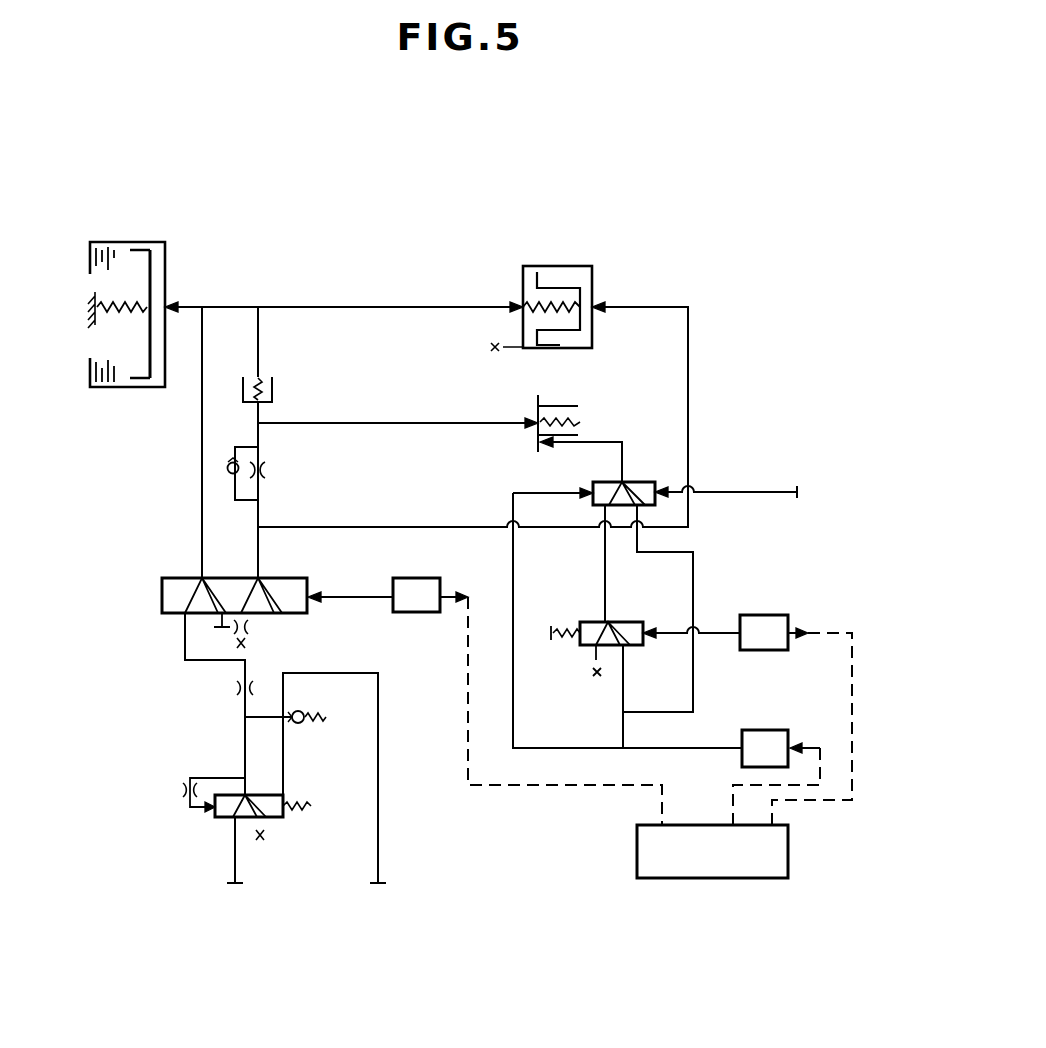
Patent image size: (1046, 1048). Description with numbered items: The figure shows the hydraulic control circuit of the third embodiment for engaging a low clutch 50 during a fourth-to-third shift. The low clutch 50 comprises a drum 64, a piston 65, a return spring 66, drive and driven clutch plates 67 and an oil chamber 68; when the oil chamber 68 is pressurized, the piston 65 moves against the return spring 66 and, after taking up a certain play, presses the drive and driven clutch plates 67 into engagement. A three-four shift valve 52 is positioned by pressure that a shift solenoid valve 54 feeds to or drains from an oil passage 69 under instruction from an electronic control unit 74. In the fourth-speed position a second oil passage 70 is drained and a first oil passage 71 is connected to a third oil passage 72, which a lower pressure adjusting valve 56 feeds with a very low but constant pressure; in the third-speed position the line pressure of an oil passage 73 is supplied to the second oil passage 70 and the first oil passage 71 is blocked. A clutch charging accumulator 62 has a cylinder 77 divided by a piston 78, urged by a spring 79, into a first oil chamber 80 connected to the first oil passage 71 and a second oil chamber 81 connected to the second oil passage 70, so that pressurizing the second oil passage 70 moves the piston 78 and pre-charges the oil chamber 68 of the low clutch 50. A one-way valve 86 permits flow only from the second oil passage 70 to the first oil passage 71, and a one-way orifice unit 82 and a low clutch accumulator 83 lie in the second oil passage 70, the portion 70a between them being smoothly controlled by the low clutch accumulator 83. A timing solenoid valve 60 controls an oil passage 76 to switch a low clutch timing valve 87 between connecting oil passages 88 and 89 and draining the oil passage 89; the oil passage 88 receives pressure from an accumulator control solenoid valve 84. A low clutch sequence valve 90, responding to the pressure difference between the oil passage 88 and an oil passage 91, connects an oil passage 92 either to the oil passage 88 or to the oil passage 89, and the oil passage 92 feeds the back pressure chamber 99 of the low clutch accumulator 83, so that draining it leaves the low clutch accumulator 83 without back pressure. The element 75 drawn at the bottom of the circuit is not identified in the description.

The low clutch 50 is at (130, 310).
The 3-4 shift valve 52 is at (318, 580).
The shift solenoid valve 54 is at (442, 580).
The lower pressure adjusting valve 56 is at (288, 785).
The timing solenoid valve 60 is at (772, 604).
The clutch charging accumulator 62 is at (543, 278).
The drum 64 is at (130, 388).
The piston 65 is at (152, 268).
The return spring 66 is at (115, 318).
The drive and driven clutch plates 67 is at (85, 258).
The oil chamber 68 is at (160, 355).
The oil passage 69 is at (355, 600).
The second oil passage 70 is at (386, 526).
The portion of second oil passage 70a is at (405, 421).
The first oil passage 71 is at (325, 304).
The third oil passage 72 is at (185, 645).
The oil passage 73 is at (380, 740).
The electronic control unit 74 is at (790, 852).
The drain 75 is at (240, 864).
The oil passage 76 is at (718, 632).
The cylinder 77 is at (548, 266).
The piston 78 is at (555, 336).
The spring 79 is at (530, 312).
The first oil chamber 80 is at (525, 298).
The second oil chamber 81 is at (592, 296).
The one-way orifice unit 82 is at (282, 470).
The low clutch accumulator 83 is at (584, 400).
The accumulator control solenoid valve 84 is at (768, 718).
The one-way valve 86 is at (283, 382).
The low clutch timing valve 87 is at (628, 612).
The oil passage 88 is at (513, 488).
The oil passage 89 is at (605, 556).
The low clutch sequence valve 90 is at (636, 470).
The oil passage 91 is at (744, 490).
The oil passage 92 is at (604, 446).
The back pressure chamber 99 is at (530, 459).